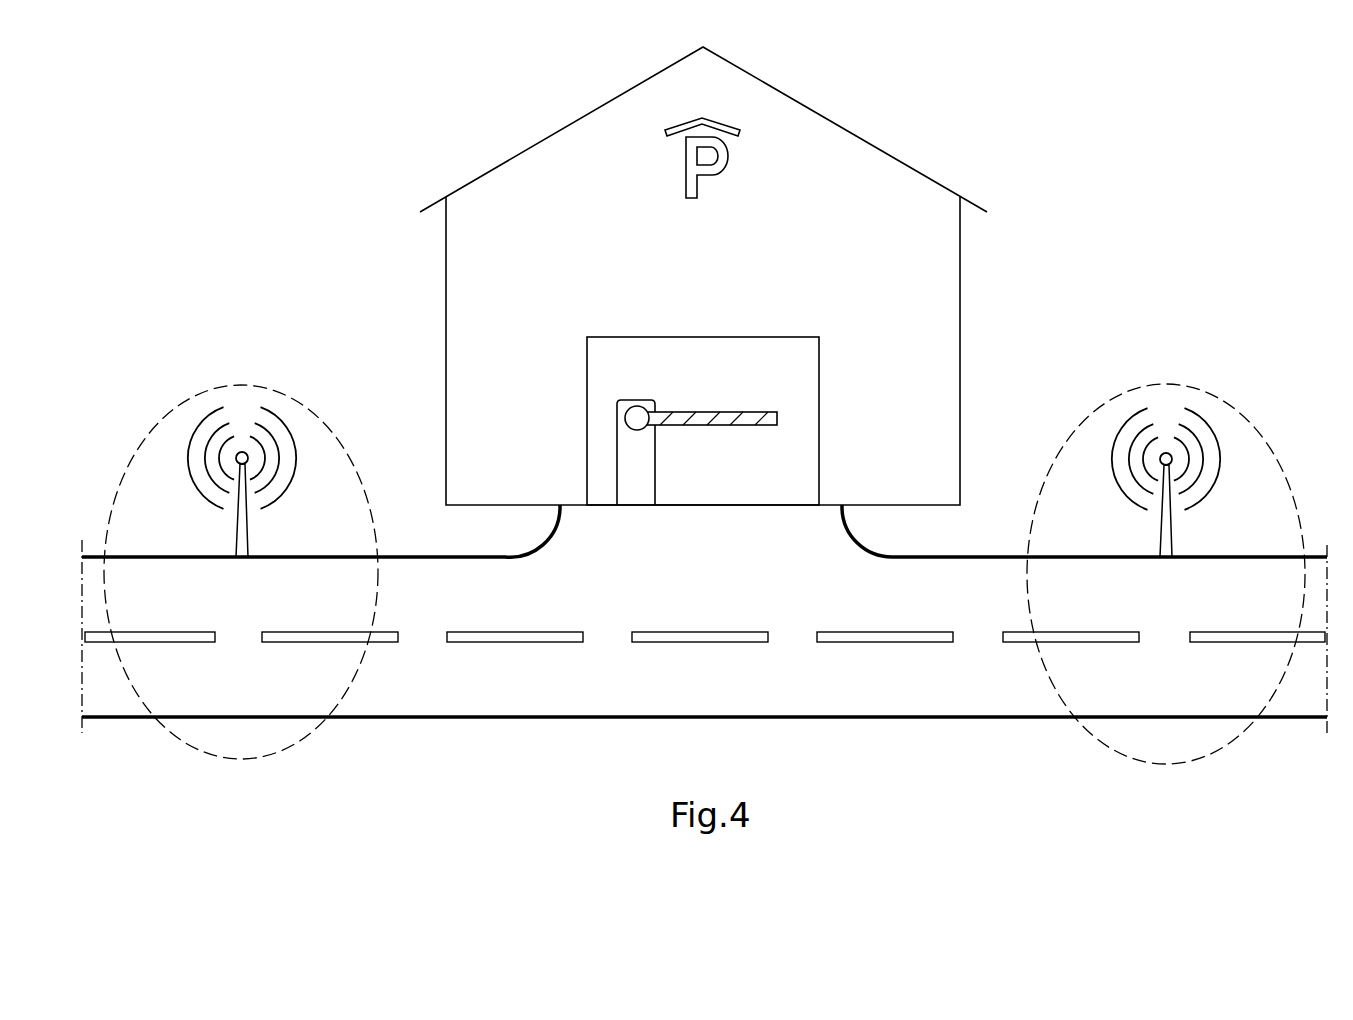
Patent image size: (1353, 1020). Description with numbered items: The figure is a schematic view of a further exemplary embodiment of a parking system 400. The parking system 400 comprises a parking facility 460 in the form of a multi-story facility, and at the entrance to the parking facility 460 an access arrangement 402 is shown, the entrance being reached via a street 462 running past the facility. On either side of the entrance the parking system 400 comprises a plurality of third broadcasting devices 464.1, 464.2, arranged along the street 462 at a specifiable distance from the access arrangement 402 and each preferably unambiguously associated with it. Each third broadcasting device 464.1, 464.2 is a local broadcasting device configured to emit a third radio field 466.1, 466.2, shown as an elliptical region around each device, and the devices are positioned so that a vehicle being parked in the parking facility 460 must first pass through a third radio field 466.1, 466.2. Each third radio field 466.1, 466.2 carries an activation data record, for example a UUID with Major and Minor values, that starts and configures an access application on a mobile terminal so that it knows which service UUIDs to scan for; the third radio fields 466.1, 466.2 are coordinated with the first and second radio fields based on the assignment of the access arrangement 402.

The parking system 400 is at (1261, 101).
The parking facility 460 is at (960, 330).
The access arrangement 402 is at (670, 527).
The street 462 is at (548, 708).
The third broadcasting device 464.1 is at (248, 542).
The third broadcasting device 464.2 is at (1172, 543).
The third radio field 466.1 is at (360, 663).
The third radio field 466.2 is at (1043, 668).